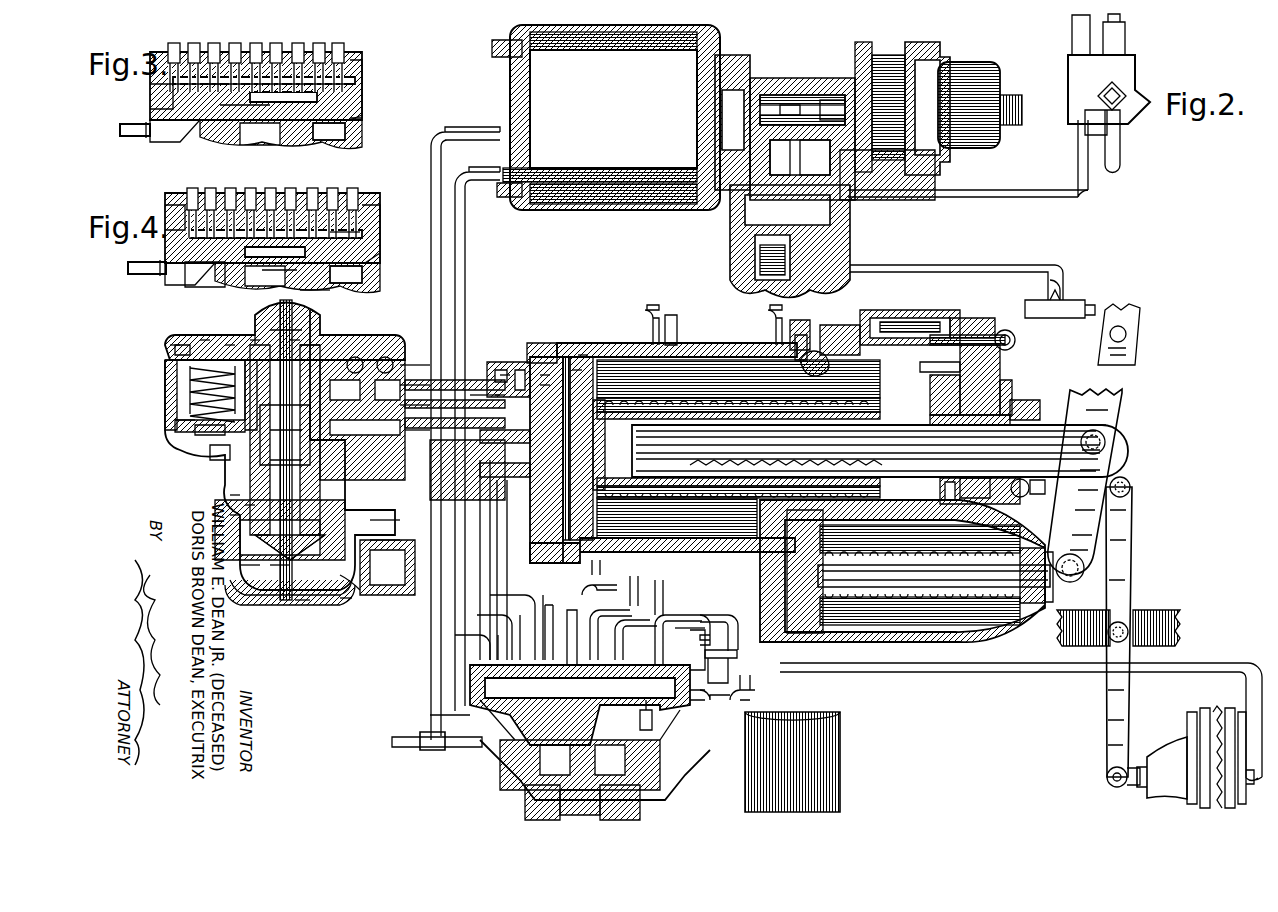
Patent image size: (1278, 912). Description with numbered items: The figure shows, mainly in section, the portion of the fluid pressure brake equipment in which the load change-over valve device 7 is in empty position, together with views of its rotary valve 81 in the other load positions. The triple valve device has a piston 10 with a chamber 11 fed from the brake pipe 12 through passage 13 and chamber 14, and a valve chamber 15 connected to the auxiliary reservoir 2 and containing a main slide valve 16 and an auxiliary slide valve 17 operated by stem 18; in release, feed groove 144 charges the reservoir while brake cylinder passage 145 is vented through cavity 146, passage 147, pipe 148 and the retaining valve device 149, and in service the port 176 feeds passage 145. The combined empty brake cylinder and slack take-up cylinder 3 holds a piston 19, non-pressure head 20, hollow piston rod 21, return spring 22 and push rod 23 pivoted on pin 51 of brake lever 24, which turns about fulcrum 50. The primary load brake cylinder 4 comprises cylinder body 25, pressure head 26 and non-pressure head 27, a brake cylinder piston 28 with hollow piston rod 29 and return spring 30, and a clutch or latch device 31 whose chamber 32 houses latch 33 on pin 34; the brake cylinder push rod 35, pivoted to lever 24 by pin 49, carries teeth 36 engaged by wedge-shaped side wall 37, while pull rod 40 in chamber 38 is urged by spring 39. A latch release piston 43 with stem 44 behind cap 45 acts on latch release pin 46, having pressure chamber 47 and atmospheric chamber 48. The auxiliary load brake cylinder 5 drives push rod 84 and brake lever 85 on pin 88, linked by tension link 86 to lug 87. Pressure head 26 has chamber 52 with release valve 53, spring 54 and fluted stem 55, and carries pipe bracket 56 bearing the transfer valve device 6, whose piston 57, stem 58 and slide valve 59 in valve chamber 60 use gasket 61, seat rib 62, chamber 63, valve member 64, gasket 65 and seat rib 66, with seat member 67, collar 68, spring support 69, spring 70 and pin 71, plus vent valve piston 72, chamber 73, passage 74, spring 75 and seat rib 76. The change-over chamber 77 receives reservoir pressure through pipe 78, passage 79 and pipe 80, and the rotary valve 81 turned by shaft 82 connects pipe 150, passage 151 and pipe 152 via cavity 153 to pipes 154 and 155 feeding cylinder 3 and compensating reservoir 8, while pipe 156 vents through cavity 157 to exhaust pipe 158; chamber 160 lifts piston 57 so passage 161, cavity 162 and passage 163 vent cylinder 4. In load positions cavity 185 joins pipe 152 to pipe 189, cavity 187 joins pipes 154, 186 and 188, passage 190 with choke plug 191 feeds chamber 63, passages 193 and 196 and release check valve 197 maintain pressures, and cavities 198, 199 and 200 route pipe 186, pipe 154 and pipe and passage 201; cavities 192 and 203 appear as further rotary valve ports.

In FIG. 2, the auxiliary reservoir 2 is at (525, 42).
In FIG. 2, the combined empty brake cylinder and slack take-up cylinder 3 is at (925, 640).
In FIG. 2, the primary load brake cylinder 4 is at (692, 340).
In FIG. 2, the auxiliary load brake cylinder 5 is at (1185, 742).
In FIG. 4, the transfer valve device 6 is at (306, 300).
In FIG. 2, the transfer valve device 6 is at (290, 449).
In FIG. 3, the load change-over valve device 7 is at (360, 85).
In FIG. 4, the load change-over valve device 7 is at (380, 236).
In FIG. 2, the load change-over valve device 7 is at (681, 770).
In FIG. 2, the compensating reservoir 8 is at (833, 788).
In FIG. 2, the piston 10 is at (920, 52).
In FIG. 2, the chamber 11 is at (965, 70).
In FIG. 2, the brake pipe 12 is at (1082, 308).
In FIG. 2, the passage 13 is at (872, 170).
In FIG. 2, the chamber 14 is at (844, 255).
In FIG. 2, the valve chamber 15 is at (760, 115).
In FIG. 2, the main slide valve 16 is at (738, 95).
In FIG. 2, the auxiliary slide valve 17 is at (790, 105).
In FIG. 2, the stem 18 is at (830, 100).
In FIG. 2, the piston 19 is at (823, 622).
In FIG. 2, the non-pressure head 20 is at (975, 632).
In FIG. 2, the hollow piston rod 21 is at (912, 592).
In FIG. 2, the return spring 22 is at (870, 592).
In FIG. 2, the push rod 23 is at (1015, 592).
In FIG. 2, the brake lever 24 is at (1086, 570).
In FIG. 2, the cylinder body 25 is at (660, 330).
In FIG. 2, the pressure head 26 is at (545, 373).
In FIG. 2, the non-pressure head 27 is at (768, 330).
In FIG. 2, the brake cylinder piston 28 is at (691, 330).
In FIG. 2, the hollow piston rod 29 is at (738, 379).
In FIG. 2, the return spring 30 is at (726, 398).
In FIG. 2, the clutch or latch device 31 is at (995, 412).
In FIG. 2, the chamber 32 is at (990, 372).
In FIG. 2, the latch 33 is at (1016, 377).
In FIG. 2, the pin 34 is at (1000, 480).
In FIG. 2, the brake cylinder push rod 35 is at (1031, 407).
In FIG. 2, the teeth 36 is at (708, 540).
In FIG. 2, the wedge-shaped side wall 37 is at (990, 429).
In FIG. 2, the chamber 38 is at (895, 308).
In FIG. 2, the spring 39 is at (970, 318).
In FIG. 2, the pull rod 40 is at (1016, 342).
In FIG. 2, the latch release piston 43 is at (810, 353).
In FIG. 2, the stem 44 is at (920, 322).
In FIG. 2, the cap 45 is at (941, 337).
In FIG. 2, the latch release pin 46 is at (960, 358).
In FIG. 2, the pressure chamber 47 is at (802, 320).
In FIG. 2, the chamber 48 is at (845, 325).
In FIG. 2, the pin 49 is at (1106, 444).
In FIG. 2, the fulcrum 50 is at (1126, 334).
In FIG. 2, the pin 51 is at (1078, 570).
In FIG. 2, the chamber 52 is at (545, 385).
In FIG. 2, the release valve 53 is at (578, 368).
In FIG. 2, the spring 54 is at (500, 395).
In FIG. 2, the fluted stem 55 is at (582, 355).
In FIG. 2, the pipe bracket 56 is at (505, 370).
In FIG. 2, the piston 57 is at (347, 600).
In FIG. 2, the stem 58 is at (305, 365).
In FIG. 2, the slide valve 59 is at (347, 362).
In FIG. 2, the valve chamber 60 is at (280, 438).
In FIG. 2, the gasket 61 is at (325, 573).
In FIG. 2, the seat rib 62 is at (290, 583).
In FIG. 2, the chamber 63 is at (230, 517).
In FIG. 2, the valve member 64 is at (290, 530).
In FIG. 2, the gasket 65 is at (230, 495).
In FIG. 2, the seat rib 66 is at (245, 504).
In FIG. 2, the seat member 67 is at (255, 340).
In FIG. 2, the collar 68 is at (257, 334).
In FIG. 2, the spring support 69 is at (230, 345).
In FIG. 2, the spring 70 is at (205, 340).
In FIG. 2, the pin 71 is at (305, 338).
In FIG. 2, the vent valve piston 72 is at (170, 367).
In FIG. 2, the chamber 73 is at (180, 350).
In FIG. 2, the passage 74 is at (175, 345).
In FIG. 2, the spring 75 is at (180, 376).
In FIG. 2, the seat rib 76 is at (180, 419).
In FIG. 3, the chamber 77 is at (365, 117).
In FIG. 4, the chamber 77 is at (380, 254).
In FIG. 2, the chamber 77 is at (683, 746).
In FIG. 3, the pipe 78 is at (126, 132).
In FIG. 4, the pipe 78 is at (127, 267).
In FIG. 2, the pipe 78 is at (418, 736).
In FIG. 2, the passage 79 is at (418, 414).
In FIG. 2, the pipe 80 is at (442, 282).
In FIG. 3, the rotary valve 81 is at (345, 95).
In FIG. 4, the rotary valve 81 is at (365, 214).
In FIG. 2, the rotary valve 81 is at (430, 715).
In FIG. 3, the shaft 82 is at (348, 126).
In FIG. 4, the shaft 82 is at (368, 275).
In FIG. 2, the shaft 82 is at (540, 793).
In FIG. 2, the push rod 84 is at (1108, 778).
In FIG. 2, the brake lever 85 is at (1108, 740).
In FIG. 2, the tension link 86 is at (1047, 497).
In FIG. 2, the lug 87 is at (1000, 495).
In FIG. 2, the pin 88 is at (1124, 628).
In FIG. 2, the feed groove 144 is at (878, 40).
In FIG. 2, the brake cylinder passage 145 is at (566, 178).
In FIG. 2, the cavity 146 is at (813, 140).
In FIG. 2, the passage 147 is at (843, 210).
In FIG. 2, the pipe 148 is at (1082, 180).
In FIG. 2, the retaining valve device 149 is at (1118, 70).
In FIG. 2, the pipe 150 is at (442, 242).
In FIG. 2, the passage 151 is at (480, 385).
In FIG. 3, the pipe 152 is at (194, 46).
In FIG. 4, the pipe 152 is at (206, 188).
In FIG. 2, the pipe 152 is at (487, 615).
In FIG. 2, the cavity 153 is at (496, 735).
In FIG. 3, the pipe 154 is at (280, 46).
In FIG. 4, the pipe 154 is at (298, 186).
In FIG. 2, the pipe 154 is at (633, 609).
In FIG. 3, the pipe 155 is at (345, 48).
In FIG. 4, the pipe 155 is at (365, 190).
In FIG. 2, the pipe 155 is at (714, 712).
In FIG. 3, the pipe 156 is at (320, 46).
In FIG. 4, the pipe 156 is at (341, 186).
In FIG. 2, the pipe 156 is at (740, 635).
In FIG. 3, the cavity 157 is at (235, 109).
In FIG. 2, the cavity 157 is at (722, 714).
In FIG. 3, the atmospheric exhaust pipe 158 is at (256, 46).
In FIG. 4, the atmospheric exhaust pipe 158 is at (278, 186).
In FIG. 2, the atmospheric exhaust pipe 158 is at (572, 643).
In FIG. 2, the chamber 160 is at (310, 602).
In FIG. 2, the passage 161 is at (588, 445).
In FIG. 2, the cavity 162 is at (261, 435).
In FIG. 2, the passage 163 is at (195, 431).
In FIG. 2, the service port 176 is at (780, 140).
In FIG. 3, the cavity 185 is at (158, 95).
In FIG. 4, the cavity 185 is at (166, 194).
In FIG. 3, the pipe 186 is at (337, 42).
In FIG. 4, the pipe 186 is at (345, 186).
In FIG. 2, the pipe 186 is at (673, 620).
In FIG. 3, the cavity 187 is at (211, 94).
In FIG. 3, the pipe 188 is at (245, 40).
In FIG. 4, the pipe 188 is at (258, 180).
In FIG. 2, the pipe 188 is at (385, 362).
In FIG. 3, the pipe 189 is at (172, 48).
In FIG. 4, the pipe 189 is at (185, 190).
In FIG. 2, the pipe 189 is at (412, 672).
In FIG. 2, the passage 190 is at (246, 563).
In FIG. 2, the choke plug 191 is at (290, 568).
In FIG. 2, the chamber 192 is at (210, 456).
In FIG. 2, the passage 193 is at (388, 519).
In FIG. 2, the passage 196 is at (406, 391).
In FIG. 2, the release check valve 197 is at (411, 345).
In FIG. 4, the cavity 198 is at (349, 239).
In FIG. 4, the cavity 199 is at (206, 274).
In FIG. 4, the cavity 200 is at (297, 300).
In FIG. 3, the pipe and passage 201 is at (214, 46).
In FIG. 4, the pipe and passage 201 is at (230, 186).
In FIG. 2, the pipe and passage 201 is at (497, 595).
In FIG. 2, the passage 203 is at (406, 366).